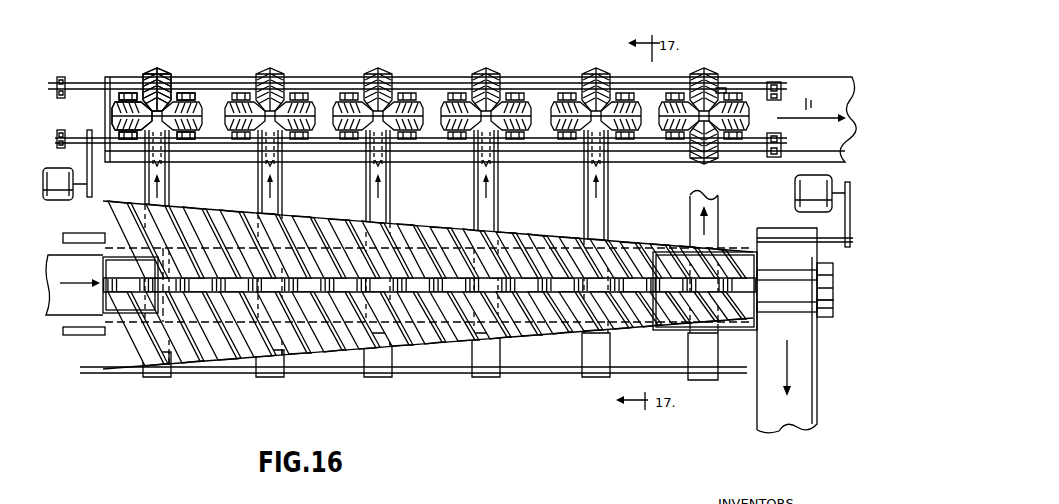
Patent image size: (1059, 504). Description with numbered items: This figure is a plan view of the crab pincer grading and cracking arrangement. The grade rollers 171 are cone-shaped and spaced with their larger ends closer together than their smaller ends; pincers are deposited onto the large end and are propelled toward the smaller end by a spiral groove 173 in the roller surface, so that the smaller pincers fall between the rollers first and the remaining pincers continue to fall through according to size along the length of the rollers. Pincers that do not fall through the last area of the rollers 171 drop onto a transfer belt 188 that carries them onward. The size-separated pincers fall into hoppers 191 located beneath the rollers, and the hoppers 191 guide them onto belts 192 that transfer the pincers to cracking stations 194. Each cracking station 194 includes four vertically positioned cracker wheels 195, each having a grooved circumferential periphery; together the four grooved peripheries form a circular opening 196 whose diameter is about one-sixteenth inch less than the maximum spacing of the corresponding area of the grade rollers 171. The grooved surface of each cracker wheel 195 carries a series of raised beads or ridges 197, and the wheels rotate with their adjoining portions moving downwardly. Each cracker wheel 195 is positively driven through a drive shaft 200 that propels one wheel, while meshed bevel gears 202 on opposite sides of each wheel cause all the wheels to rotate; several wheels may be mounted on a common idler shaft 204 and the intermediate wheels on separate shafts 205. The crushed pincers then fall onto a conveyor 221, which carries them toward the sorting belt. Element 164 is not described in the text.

The inlet conduit 164 is at (62, 318).
The grade rollers 171 is at (325, 218).
The spiral groove 173 is at (450, 220).
The transfer belt 188 is at (775, 242).
The hoppers 191 is at (683, 252).
The belts 192 is at (146, 181).
The cracking stations 194 is at (173, 68).
The cracker wheels 195 is at (184, 93).
The circular opening 196 is at (721, 90).
The raised beads or ridges 197 is at (158, 68).
The drive shaft 200 is at (82, 143).
The bevel gears 202 is at (119, 102).
The common idler shaft 204 is at (82, 83).
The separate shafts 205 is at (178, 99).
The conveyor 221 is at (807, 97).